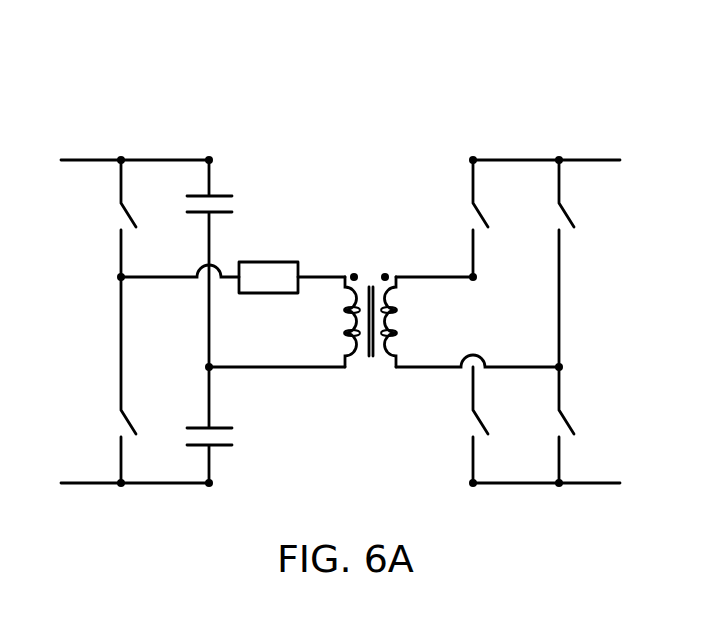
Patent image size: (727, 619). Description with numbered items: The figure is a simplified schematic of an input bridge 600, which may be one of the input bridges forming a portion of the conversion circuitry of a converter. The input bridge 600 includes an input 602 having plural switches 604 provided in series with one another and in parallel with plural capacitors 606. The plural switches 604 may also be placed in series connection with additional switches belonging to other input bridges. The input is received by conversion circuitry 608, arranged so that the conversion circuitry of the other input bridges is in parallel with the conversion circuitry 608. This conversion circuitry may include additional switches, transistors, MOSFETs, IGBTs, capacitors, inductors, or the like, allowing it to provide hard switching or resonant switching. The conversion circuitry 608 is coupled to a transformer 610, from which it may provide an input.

The input bridge 600 is at (448, 65).
The input 602 is at (92, 123).
The plural switches 604 is at (128, 212).
The plural capacitors 606 is at (223, 193).
The conversion circuitry 608 is at (328, 153).
The transformer 610 is at (374, 250).